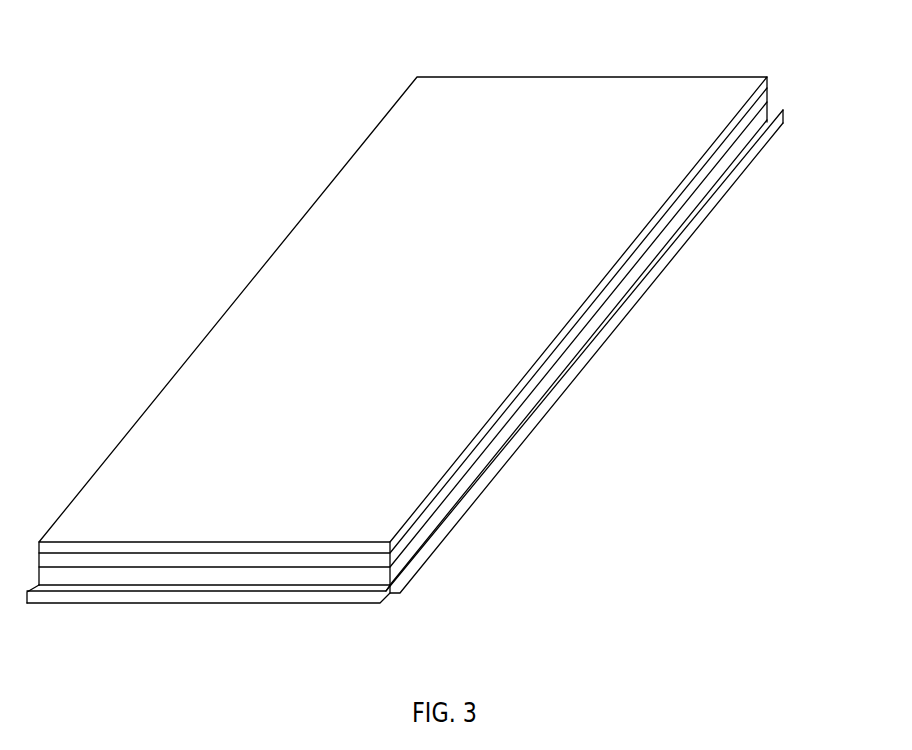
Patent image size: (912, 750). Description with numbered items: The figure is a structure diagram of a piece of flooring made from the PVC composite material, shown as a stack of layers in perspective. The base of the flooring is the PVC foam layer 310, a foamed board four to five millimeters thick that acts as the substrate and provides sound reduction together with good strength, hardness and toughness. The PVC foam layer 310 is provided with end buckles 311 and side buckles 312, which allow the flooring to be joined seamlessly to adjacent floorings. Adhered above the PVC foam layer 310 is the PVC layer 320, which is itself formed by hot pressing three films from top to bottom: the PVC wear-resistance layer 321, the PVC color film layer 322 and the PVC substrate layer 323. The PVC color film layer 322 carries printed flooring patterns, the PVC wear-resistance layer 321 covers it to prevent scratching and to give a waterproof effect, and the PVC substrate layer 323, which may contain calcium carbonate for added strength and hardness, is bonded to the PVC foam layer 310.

The PVC foam layer 310 is at (768, 110).
The end buckles 311 is at (403, 598).
The side buckles 312 is at (460, 499).
The PVC layer 320 is at (767, 77).
The PVC wear-resistance layer 321 is at (670, 210).
The PVC color film layer 322 is at (597, 292).
The PVC substrate layer 323 is at (538, 366).